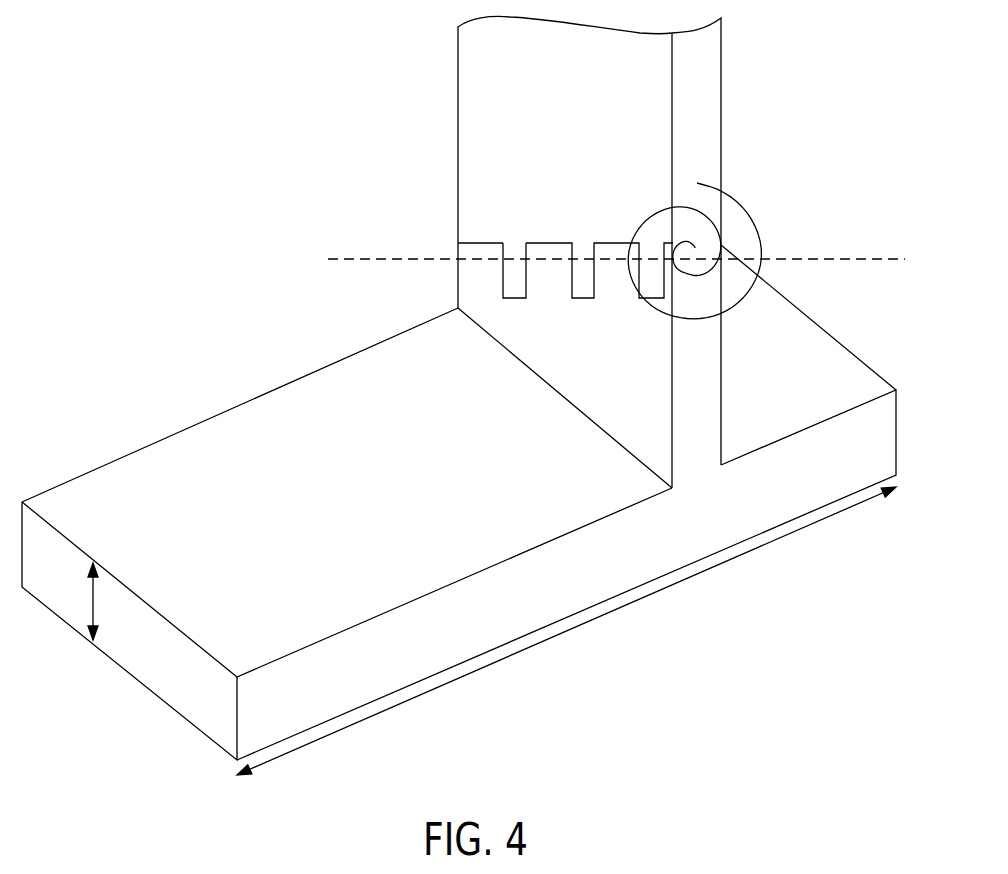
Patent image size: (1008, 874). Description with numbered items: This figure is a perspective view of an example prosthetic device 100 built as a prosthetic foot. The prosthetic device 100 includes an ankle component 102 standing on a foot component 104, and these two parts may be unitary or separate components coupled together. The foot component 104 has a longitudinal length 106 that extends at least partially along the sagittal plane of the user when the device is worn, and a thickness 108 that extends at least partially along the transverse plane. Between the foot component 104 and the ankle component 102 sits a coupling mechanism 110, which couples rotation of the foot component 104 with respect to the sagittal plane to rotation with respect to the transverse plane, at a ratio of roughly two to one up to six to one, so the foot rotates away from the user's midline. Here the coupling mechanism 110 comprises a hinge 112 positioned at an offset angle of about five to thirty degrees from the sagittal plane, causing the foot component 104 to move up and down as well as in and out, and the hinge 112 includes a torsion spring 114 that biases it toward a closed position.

The prosthetic device 100 is at (150, 146).
The ankle component 102 is at (447, 116).
The foot component 104 is at (278, 365).
The longitudinal length 106 is at (614, 616).
The thickness 108 is at (94, 600).
The coupling mechanism 110 is at (447, 240).
The hinge 112 is at (485, 243).
The torsion spring 114 is at (740, 197).